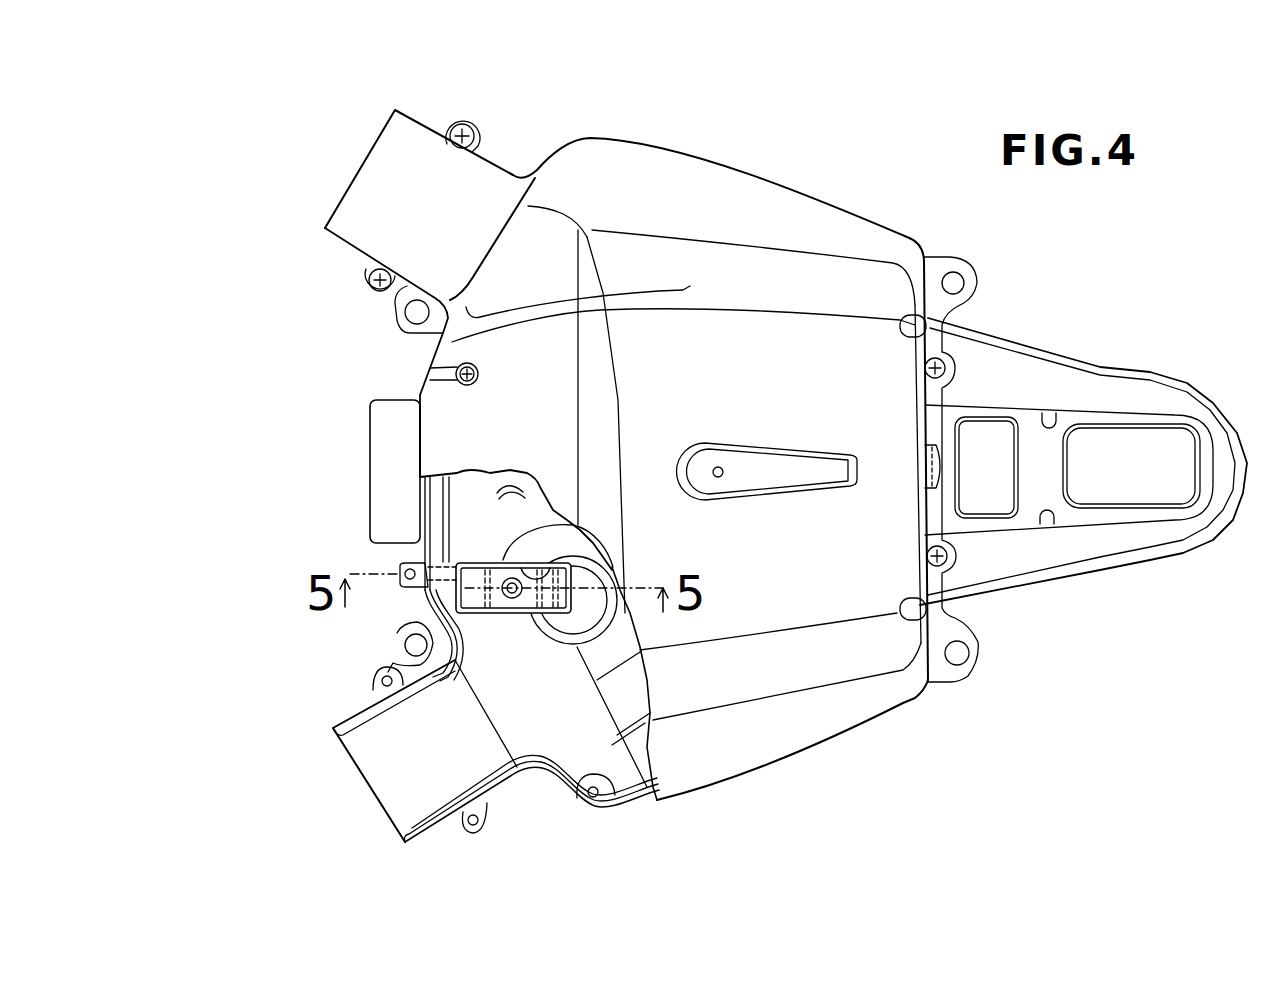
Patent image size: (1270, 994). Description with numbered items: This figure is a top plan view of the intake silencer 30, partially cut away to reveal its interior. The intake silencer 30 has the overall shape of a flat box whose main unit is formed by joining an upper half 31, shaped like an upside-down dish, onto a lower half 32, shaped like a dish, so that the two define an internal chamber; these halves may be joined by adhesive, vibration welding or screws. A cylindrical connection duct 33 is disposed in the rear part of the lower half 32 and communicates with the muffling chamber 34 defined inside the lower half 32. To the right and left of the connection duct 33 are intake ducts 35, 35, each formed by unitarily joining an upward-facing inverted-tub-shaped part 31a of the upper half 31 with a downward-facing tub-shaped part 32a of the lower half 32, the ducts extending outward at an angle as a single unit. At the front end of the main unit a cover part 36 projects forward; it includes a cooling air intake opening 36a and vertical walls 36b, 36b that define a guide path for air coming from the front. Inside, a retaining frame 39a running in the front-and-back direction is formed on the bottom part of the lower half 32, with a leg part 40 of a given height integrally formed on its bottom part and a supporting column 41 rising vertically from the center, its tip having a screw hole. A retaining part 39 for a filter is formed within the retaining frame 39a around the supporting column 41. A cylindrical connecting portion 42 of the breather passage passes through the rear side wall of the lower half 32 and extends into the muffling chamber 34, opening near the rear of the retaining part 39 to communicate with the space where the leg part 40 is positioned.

The intake silencer 30 is at (848, 182).
The upper half 31 is at (761, 192).
The inverted-tub-shaped part 31a is at (478, 190).
The lower half 32 is at (565, 802).
The tub-shaped part 32a is at (370, 765).
The connection duct 33 is at (388, 466).
The muffling chamber 34 is at (536, 500).
The intake duct 35 is at (383, 181).
The cover part 36 is at (1060, 380).
The cooling air intake opening 36a is at (1168, 447).
The vertical wall 36b is at (1052, 412).
The retaining part 39 is at (548, 572).
The retaining frame 39a is at (524, 624).
The leg part 40 is at (473, 578).
The supporting column 41 is at (507, 598).
The connecting portion 42 is at (403, 583).